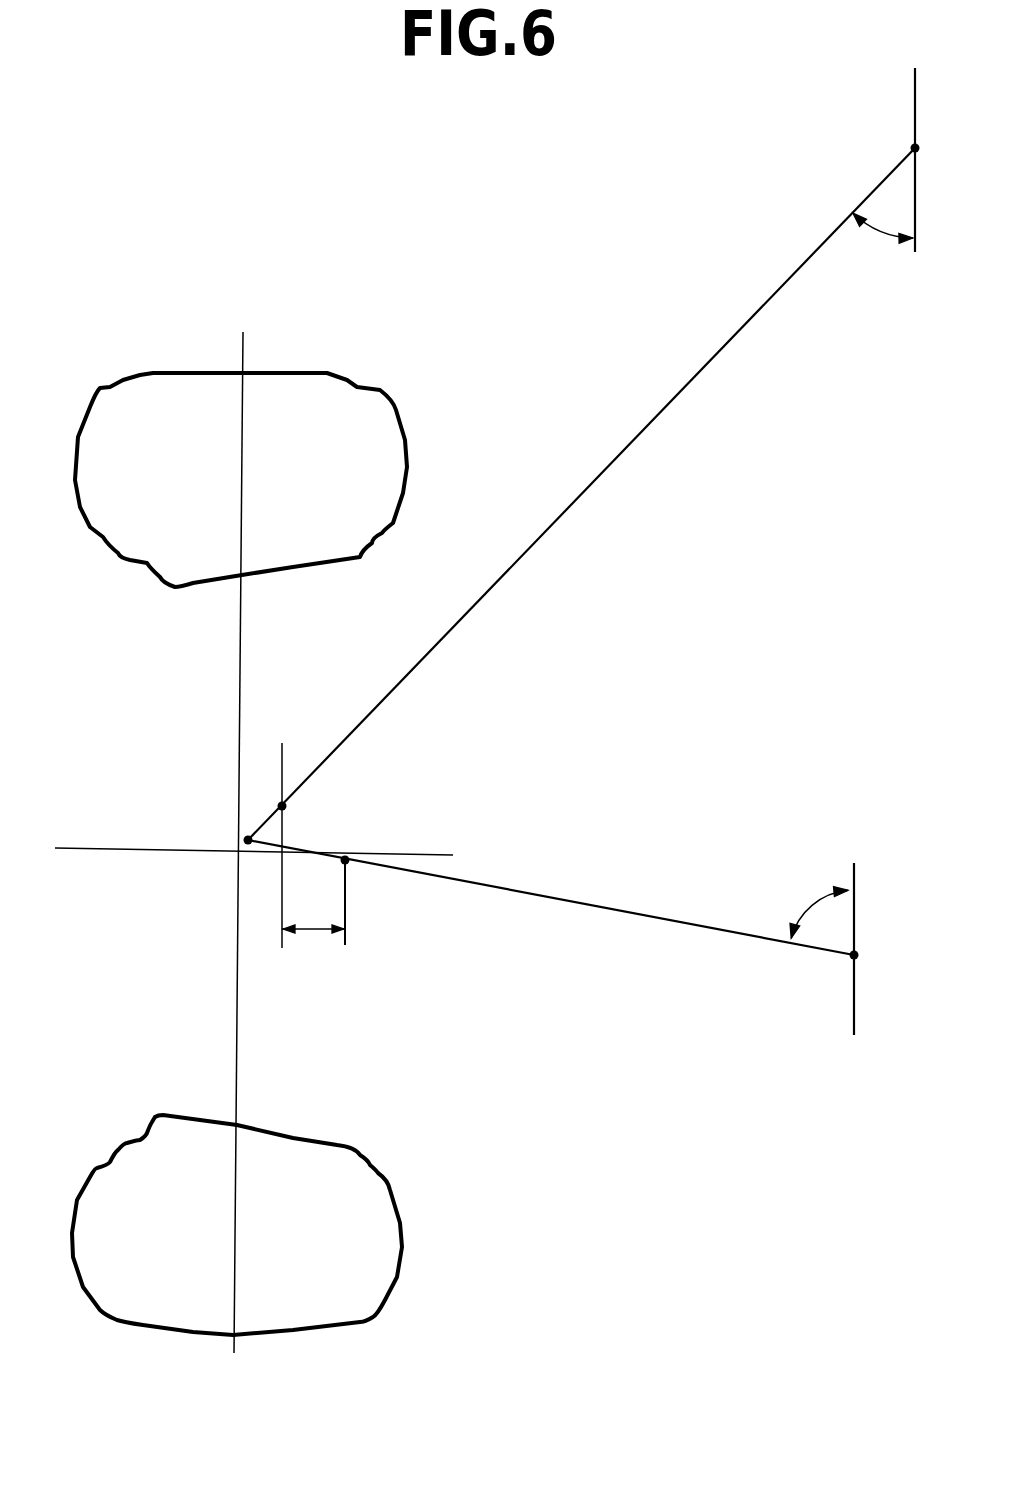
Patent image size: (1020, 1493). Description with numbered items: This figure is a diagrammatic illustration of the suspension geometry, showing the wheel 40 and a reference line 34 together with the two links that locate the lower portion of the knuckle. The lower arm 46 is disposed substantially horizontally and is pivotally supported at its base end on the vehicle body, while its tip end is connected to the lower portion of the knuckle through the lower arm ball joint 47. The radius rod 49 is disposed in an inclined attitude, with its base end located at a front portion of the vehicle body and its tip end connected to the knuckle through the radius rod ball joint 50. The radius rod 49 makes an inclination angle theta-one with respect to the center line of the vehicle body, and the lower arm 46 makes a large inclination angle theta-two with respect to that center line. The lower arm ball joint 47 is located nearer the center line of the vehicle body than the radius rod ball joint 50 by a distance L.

The reference line through point a 34 is at (147, 848).
The front left wheel 40 is at (383, 408).
The lower arm 46 is at (613, 908).
The lower arm ball joint 47 is at (352, 857).
The radius rod 49 is at (620, 453).
The radius rod ball joint 50 is at (283, 800).